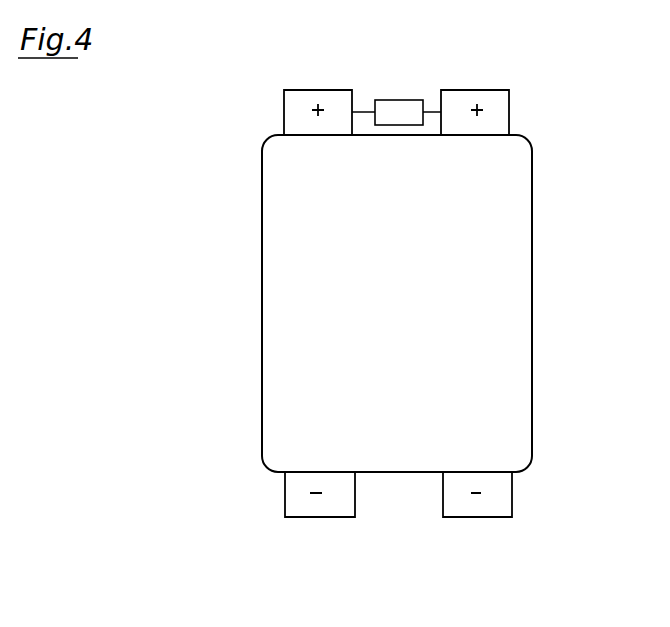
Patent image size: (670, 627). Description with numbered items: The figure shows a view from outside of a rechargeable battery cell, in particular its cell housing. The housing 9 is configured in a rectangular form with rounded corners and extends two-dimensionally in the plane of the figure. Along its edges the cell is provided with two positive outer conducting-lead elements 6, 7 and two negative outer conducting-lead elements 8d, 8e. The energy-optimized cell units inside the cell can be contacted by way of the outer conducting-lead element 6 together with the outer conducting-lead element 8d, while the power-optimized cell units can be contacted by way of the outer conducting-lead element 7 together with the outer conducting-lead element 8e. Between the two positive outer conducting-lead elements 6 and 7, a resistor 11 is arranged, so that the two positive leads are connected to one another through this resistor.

The positive outer conducting-lead element 6 is at (283, 91).
The positive outer conducting-lead element 7 is at (497, 102).
The negative outer conducting-lead element 8d is at (300, 503).
The negative outer conducting-lead element 8e is at (500, 489).
The housing 9 is at (510, 360).
The resistor 11 is at (400, 115).